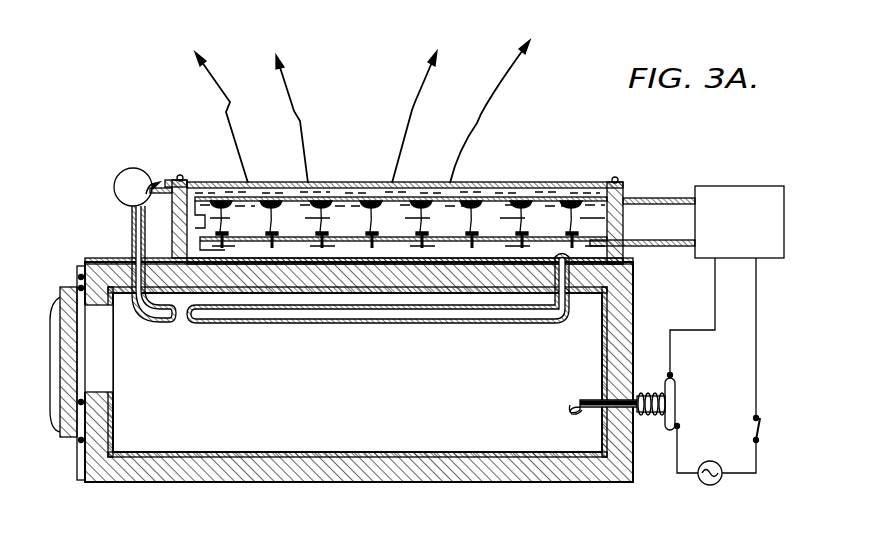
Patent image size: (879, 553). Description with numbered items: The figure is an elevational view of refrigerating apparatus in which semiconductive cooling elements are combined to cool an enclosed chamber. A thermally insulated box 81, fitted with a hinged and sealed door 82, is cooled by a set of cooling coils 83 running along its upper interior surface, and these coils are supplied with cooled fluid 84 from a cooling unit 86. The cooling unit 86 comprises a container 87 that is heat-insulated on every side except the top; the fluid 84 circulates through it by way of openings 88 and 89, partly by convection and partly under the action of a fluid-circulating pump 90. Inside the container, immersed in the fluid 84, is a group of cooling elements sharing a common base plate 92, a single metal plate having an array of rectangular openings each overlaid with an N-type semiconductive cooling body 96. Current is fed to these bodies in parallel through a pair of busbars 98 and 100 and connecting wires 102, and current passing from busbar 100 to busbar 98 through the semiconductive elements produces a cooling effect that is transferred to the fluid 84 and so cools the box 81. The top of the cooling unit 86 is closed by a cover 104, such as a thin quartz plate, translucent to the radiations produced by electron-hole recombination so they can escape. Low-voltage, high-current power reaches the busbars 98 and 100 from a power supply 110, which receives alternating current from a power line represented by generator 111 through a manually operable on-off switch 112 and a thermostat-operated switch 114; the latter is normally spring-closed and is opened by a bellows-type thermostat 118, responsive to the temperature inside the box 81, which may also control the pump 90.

The thermally insulated box 81 is at (140, 482).
The hinged door 82 is at (50, 368).
The cooling coils 83 is at (285, 323).
The cooled fluid 84 is at (382, 312).
The cooling unit 86 is at (362, 151).
The container 87 is at (171, 218).
The opening 88 is at (163, 180).
The opening 89 is at (572, 296).
The fluid-circulating pump 90 is at (119, 170).
The base plate 92 is at (354, 208).
The N-type semiconductive cooling body 96 is at (451, 208).
The busbar 98 is at (648, 196).
The busbar 100 is at (674, 250).
The connecting wire 102 is at (272, 222).
The cover 104 is at (502, 183).
The power supply 110 is at (734, 185).
The generator 111 is at (720, 483).
The manually-operable on-off switch 112 is at (763, 425).
The thermostat-operated switch 114 is at (690, 402).
The bellows-type thermostat 118 is at (646, 383).